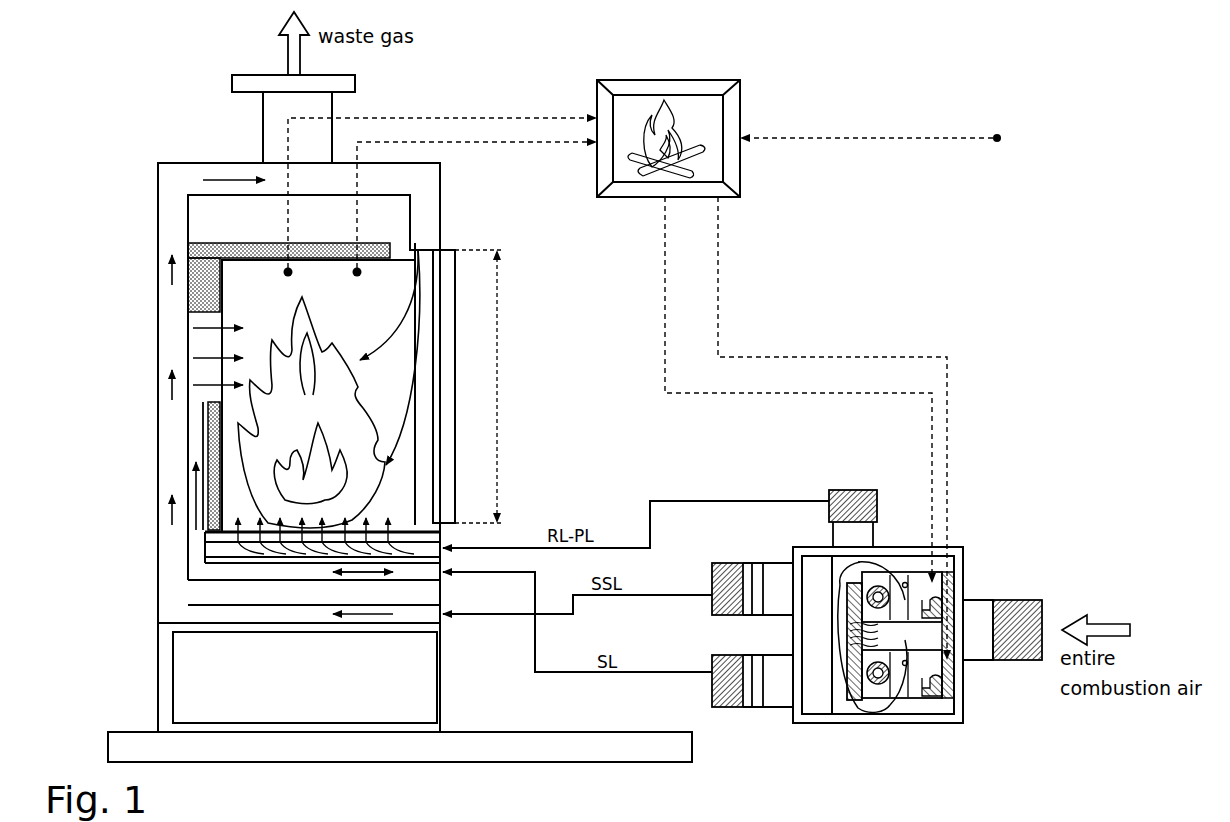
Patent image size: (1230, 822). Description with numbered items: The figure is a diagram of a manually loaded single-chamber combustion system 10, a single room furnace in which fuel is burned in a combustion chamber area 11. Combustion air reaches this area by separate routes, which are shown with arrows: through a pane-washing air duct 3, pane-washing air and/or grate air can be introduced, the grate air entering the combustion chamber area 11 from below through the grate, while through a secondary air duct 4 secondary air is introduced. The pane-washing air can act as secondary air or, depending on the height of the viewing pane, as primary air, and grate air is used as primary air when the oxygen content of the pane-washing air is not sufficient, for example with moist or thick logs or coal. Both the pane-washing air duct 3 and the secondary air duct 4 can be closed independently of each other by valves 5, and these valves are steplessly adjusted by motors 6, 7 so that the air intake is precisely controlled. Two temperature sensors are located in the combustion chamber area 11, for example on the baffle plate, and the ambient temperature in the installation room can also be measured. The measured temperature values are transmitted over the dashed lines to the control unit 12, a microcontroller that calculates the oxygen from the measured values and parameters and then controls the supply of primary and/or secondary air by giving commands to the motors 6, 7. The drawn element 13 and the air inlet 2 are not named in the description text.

The combustion air inlet 2 is at (1025, 600).
The pane-washing air duct 3 is at (735, 708).
The secondary air duct 4 is at (723, 562).
The valve 5 is at (838, 565).
The motor 6 is at (906, 572).
The motor 7 is at (905, 700).
The single-chamber combustion system 10 is at (180, 162).
The combustion chamber area 11 is at (375, 268).
The control unit 12 is at (700, 118).
The primary air line connection 13 is at (858, 490).